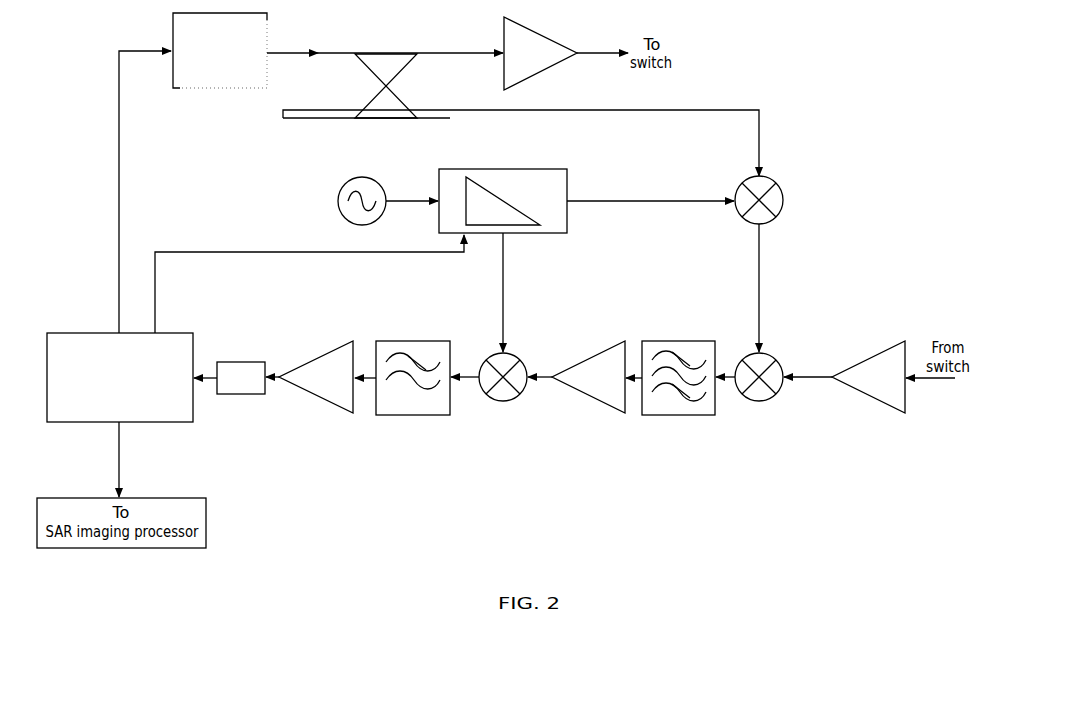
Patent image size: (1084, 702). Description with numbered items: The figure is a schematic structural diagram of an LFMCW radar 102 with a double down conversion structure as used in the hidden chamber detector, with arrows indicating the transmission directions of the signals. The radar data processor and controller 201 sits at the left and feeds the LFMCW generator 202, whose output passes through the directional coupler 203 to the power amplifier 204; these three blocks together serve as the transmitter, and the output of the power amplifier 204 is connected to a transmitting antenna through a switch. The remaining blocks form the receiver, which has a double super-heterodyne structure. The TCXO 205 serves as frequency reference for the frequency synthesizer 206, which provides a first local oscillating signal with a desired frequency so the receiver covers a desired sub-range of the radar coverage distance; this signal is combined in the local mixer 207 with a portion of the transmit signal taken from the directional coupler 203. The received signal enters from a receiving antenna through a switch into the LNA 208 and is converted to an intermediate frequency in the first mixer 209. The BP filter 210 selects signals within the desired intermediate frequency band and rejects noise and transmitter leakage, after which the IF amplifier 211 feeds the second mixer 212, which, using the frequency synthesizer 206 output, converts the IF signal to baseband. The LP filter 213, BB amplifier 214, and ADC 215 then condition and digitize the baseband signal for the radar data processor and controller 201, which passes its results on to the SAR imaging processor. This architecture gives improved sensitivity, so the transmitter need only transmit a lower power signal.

The LFMCW radar 102 is at (900, 62).
The radar data processor and controller 201 is at (255, 274).
The LFMCW generator 202 is at (245, 50).
The directional coupler 203 is at (520, 114).
The power amplifier 204 is at (566, 59).
The temperature compensated crystal oscillator (TCXO) 205 is at (364, 201).
The frequency synthesizer 206 is at (586, 241).
The local mixer 207 is at (811, 264).
The low noise amplifier (LNA) 208 is at (869, 397).
The first mixer 209 is at (757, 403).
The bandpass (BP) filter 210 is at (670, 397).
The intermediate-frequency (IF) amplifier 211 is at (583, 397).
The second mixer 212 is at (502, 403).
The low pass (LP) filter 213 is at (402, 397).
The baseband (BB) amplifier 214 is at (315, 397).
The analog-to-digital converter (ADC) 215 is at (229, 408).